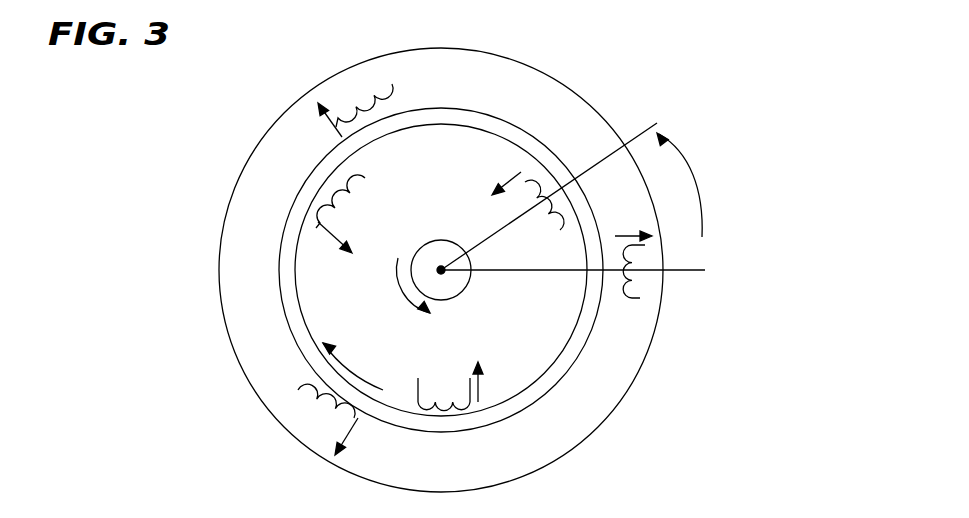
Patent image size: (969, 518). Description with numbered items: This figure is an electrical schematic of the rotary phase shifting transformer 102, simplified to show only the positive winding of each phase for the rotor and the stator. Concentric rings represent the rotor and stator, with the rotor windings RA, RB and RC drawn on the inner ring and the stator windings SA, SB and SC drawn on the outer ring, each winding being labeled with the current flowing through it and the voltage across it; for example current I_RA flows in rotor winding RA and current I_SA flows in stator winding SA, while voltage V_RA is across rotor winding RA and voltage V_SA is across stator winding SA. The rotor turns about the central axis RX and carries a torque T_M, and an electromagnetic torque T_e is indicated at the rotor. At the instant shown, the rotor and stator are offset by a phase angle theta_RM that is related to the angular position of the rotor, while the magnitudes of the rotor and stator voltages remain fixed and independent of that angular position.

The rotary phase shifting transformer 102 is at (779, 133).
The axis RX is at (441, 270).
The rotor winding RA+ RA is at (548, 188).
The rotor winding RB+ RB is at (466, 404).
The rotor winding RC+ RC is at (365, 178).
The stator winding SA+ SA is at (640, 298).
The stator winding SB+ SB is at (298, 390).
The stator winding SC+ SC is at (392, 84).